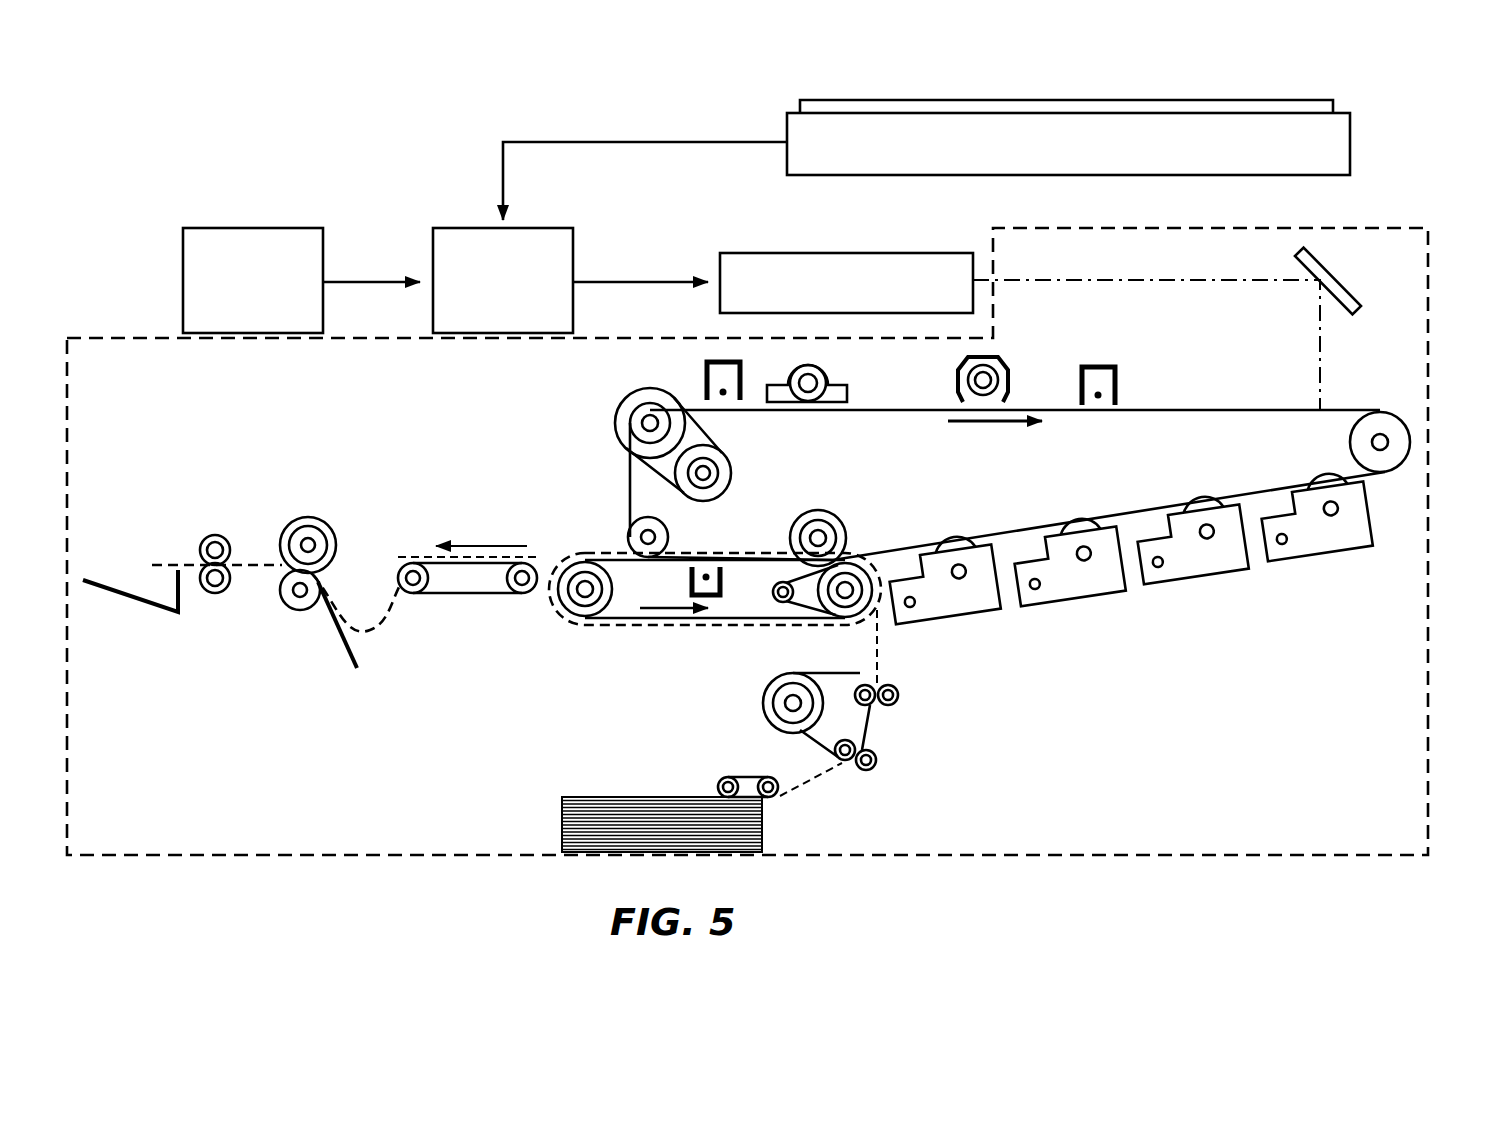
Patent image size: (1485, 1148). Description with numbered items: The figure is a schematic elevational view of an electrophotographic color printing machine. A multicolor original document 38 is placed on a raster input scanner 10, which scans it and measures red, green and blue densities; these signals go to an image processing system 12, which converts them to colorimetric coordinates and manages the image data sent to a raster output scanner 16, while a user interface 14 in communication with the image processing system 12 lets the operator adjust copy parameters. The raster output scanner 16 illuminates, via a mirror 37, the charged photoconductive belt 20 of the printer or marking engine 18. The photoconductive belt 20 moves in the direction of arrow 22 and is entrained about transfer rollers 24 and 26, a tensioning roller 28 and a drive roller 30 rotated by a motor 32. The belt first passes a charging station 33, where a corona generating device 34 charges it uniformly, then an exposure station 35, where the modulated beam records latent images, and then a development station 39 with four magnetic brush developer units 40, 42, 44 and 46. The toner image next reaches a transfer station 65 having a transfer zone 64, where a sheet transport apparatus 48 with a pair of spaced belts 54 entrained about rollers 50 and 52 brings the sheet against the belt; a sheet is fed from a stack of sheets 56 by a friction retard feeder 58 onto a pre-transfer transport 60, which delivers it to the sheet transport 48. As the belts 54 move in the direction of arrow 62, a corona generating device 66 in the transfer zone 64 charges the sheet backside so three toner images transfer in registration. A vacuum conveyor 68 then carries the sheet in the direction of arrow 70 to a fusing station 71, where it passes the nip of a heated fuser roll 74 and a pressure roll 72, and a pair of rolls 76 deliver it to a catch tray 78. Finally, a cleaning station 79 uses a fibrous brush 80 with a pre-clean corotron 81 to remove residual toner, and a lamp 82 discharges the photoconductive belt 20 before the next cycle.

The raster input scanner 10 is at (764, 124).
The image processing system 12 is at (572, 224).
The user interface 14 is at (302, 214).
The raster output scanner 16 is at (895, 240).
The printer or marking engine 18 is at (1380, 224).
The photoconductive belt 20 is at (1205, 406).
The arrow 22 is at (1005, 426).
The transfer roller 24 is at (628, 537).
The transfer roller 26 is at (842, 524).
The tensioning roller 28 is at (1383, 404).
The drive roller 30 is at (630, 410).
The motor 32 is at (720, 468).
The charging station 33 is at (1132, 388).
The corona generating device 34 is at (1098, 366).
The exposure station 35 is at (1303, 386).
The mirror 37 is at (1318, 258).
The multicolor original document 38 is at (1330, 113).
The development station 39 is at (1171, 642).
The developer unit 40 is at (1330, 562).
The developer unit 42 is at (1190, 587).
The developer unit 44 is at (1080, 587).
The developer unit 46 is at (955, 632).
The sheet transport apparatus 48 is at (637, 646).
The roller 50 is at (568, 602).
The roller 52 is at (848, 617).
The belts 54 is at (730, 619).
The stack of sheets 56 is at (580, 800).
The friction retard feeder 58 is at (748, 777).
The pre-transfer transport 60 is at (868, 735).
The arrow 62 is at (680, 613).
The transfer zone 64 is at (706, 546).
The transfer station 65 is at (733, 571).
The corona generating device 66 is at (692, 570).
The vacuum conveyor 68 is at (450, 601).
The arrow 70 is at (465, 544).
The fusing station 71 is at (301, 500).
The pressure roll 72 is at (294, 610).
The fuser roll 74 is at (327, 528).
The pair of rolls 76 is at (226, 540).
The catch tray 78 is at (105, 592).
The cleaning station 79 is at (824, 422).
The fibrous brush 80 is at (825, 375).
The pre-clean corotron 81 is at (705, 378).
The lamp 82 is at (995, 368).